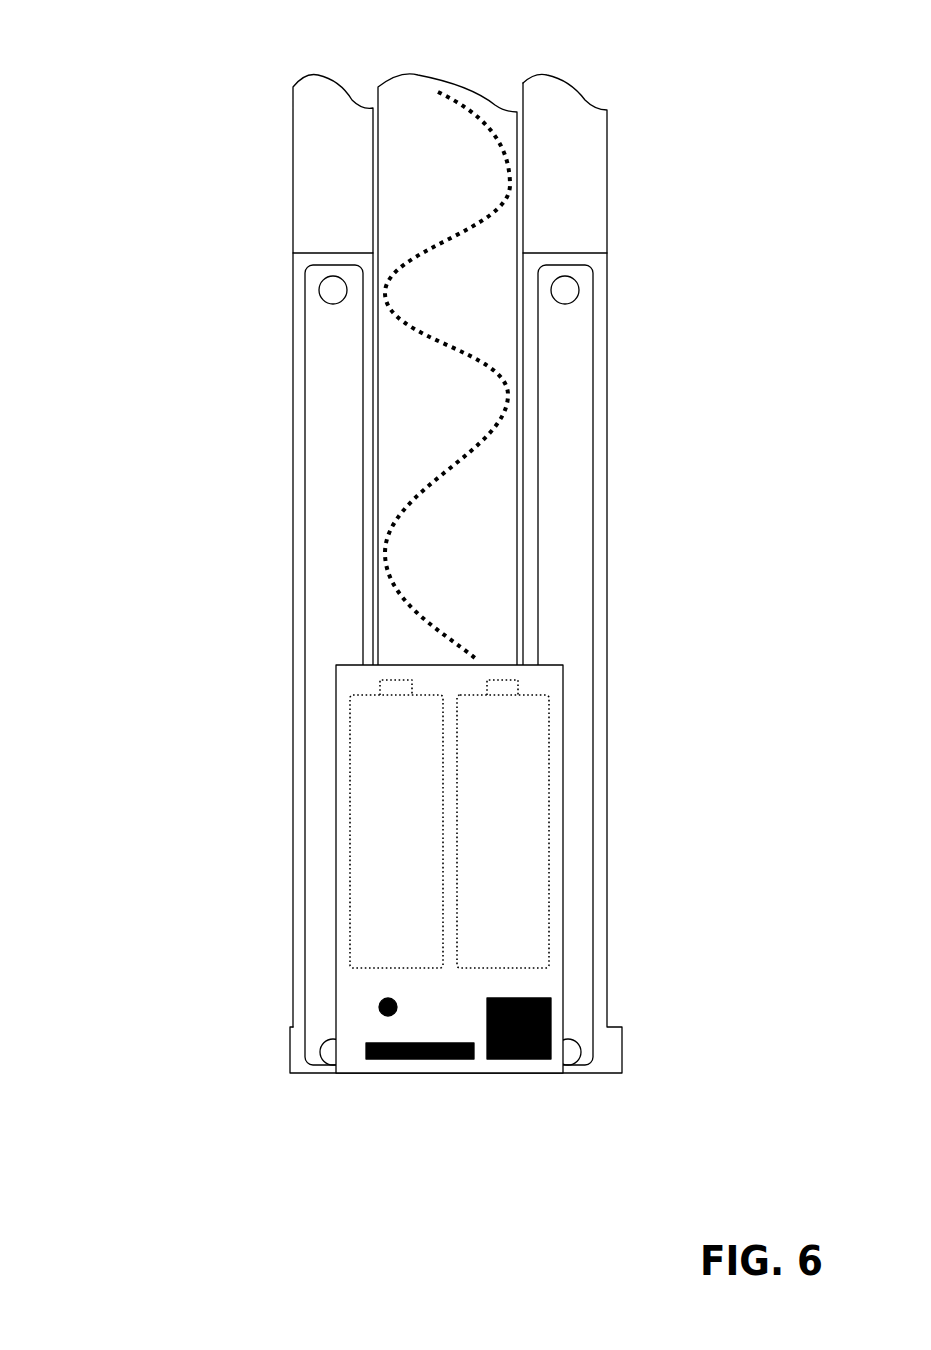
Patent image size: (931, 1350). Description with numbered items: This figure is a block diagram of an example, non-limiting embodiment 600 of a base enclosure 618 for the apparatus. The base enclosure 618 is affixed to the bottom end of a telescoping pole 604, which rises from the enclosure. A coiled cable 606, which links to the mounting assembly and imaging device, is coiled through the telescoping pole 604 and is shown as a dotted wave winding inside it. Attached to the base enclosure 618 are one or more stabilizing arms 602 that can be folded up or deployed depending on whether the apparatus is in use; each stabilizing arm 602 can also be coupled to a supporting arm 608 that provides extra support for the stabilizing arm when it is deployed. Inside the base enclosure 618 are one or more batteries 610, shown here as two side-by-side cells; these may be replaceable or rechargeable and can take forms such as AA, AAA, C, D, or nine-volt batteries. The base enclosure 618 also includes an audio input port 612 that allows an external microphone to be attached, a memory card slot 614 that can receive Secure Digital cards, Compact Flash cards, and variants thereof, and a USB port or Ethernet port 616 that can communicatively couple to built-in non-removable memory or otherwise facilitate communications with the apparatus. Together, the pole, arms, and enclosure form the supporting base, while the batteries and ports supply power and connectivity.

The embodiment of a base enclosure 600 is at (117, 56).
The stabilizing arm 602 is at (292, 216).
The telescoping pole 604 is at (373, 178).
The coiled cable 606 is at (463, 115).
The supporting arm 608 is at (330, 575).
The batteries 610 is at (352, 790).
The audio input port 612 is at (380, 1005).
The memory card slot 614 is at (410, 1060).
The USB port or Ethernet port 616 is at (518, 1060).
The base enclosure 618 is at (333, 882).